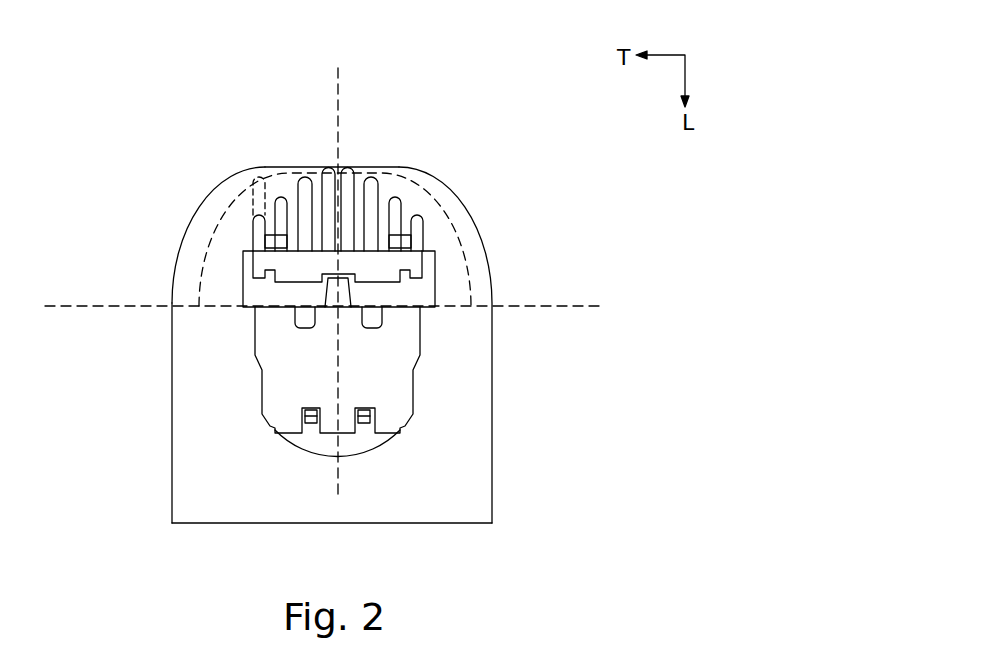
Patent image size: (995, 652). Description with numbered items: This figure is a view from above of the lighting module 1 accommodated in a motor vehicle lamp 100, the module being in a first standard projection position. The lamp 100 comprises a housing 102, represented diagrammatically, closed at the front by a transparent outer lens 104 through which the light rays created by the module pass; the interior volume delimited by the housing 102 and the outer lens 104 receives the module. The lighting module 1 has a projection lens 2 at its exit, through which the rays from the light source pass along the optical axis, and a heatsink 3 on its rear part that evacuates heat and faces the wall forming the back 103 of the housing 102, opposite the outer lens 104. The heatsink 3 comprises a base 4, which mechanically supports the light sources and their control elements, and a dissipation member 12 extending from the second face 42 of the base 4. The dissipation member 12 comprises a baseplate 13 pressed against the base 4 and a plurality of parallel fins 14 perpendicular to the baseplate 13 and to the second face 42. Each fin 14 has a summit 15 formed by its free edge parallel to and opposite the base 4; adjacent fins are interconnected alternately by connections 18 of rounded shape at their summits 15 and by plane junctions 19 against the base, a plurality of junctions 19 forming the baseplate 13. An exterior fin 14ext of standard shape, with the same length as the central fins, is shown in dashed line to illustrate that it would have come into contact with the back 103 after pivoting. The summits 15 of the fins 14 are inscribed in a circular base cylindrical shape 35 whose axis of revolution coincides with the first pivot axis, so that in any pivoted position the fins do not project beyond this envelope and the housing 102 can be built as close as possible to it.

The lighting module 1 is at (362, 296).
The projection lens 2 is at (305, 453).
The heatsink 3 is at (301, 209).
The base 4 is at (226, 258).
The dissipation member 12 is at (250, 152).
The baseplate 13 is at (266, 164).
The plane junction 19 is at (298, 245).
The fin 14 is at (370, 176).
The exterior fin of standard shape 14ext is at (245, 199).
The summit 15 is at (366, 164).
The connection of rounded shape 18 is at (348, 170).
The circular base cylindrical shape 35 is at (489, 275).
The second face 42 is at (440, 238).
The lamp 100 is at (312, 372).
The housing 102 is at (170, 477).
The back 103 is at (402, 167).
The transparent outer lens 104 is at (238, 525).